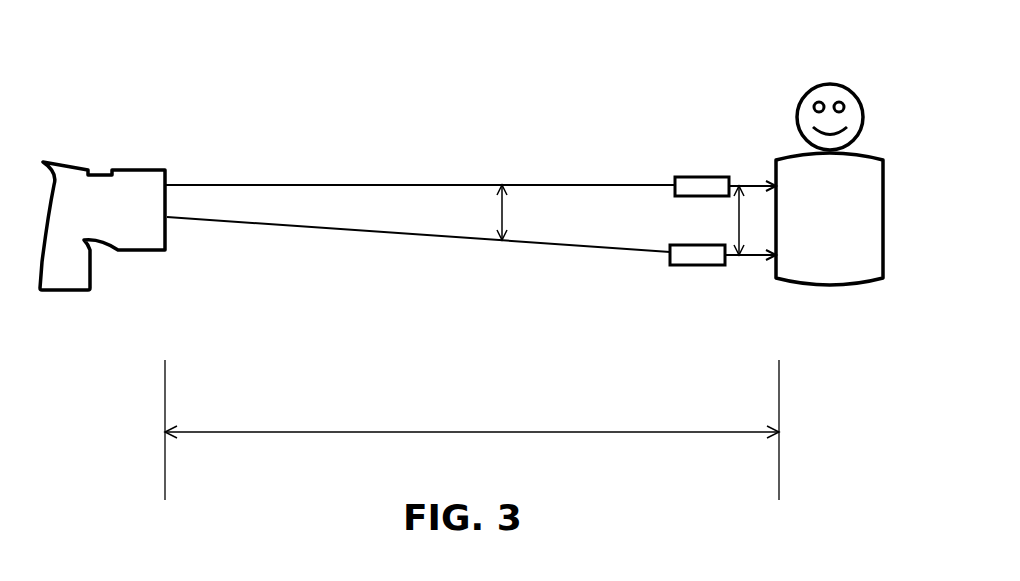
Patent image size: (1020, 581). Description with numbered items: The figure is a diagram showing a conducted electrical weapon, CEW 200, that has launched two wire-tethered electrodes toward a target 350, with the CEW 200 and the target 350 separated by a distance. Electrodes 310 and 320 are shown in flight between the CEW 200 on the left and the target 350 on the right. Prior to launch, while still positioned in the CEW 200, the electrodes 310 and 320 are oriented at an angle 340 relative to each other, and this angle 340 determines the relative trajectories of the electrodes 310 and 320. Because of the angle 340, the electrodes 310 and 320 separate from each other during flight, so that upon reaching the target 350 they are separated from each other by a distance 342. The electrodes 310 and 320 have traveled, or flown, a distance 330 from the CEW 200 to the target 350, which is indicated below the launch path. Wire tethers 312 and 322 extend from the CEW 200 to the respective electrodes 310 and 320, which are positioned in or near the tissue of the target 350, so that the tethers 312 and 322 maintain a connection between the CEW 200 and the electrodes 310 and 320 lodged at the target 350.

The CEW 200 is at (88, 172).
The wire-tethered electrode 310 is at (703, 175).
The wire tether 312 is at (248, 183).
The wire-tethered electrode 320 is at (698, 266).
The wire tether 322 is at (250, 223).
The distance 330 is at (273, 430).
The angle 340 is at (505, 216).
The distance 342 is at (738, 217).
The target 350 is at (828, 84).